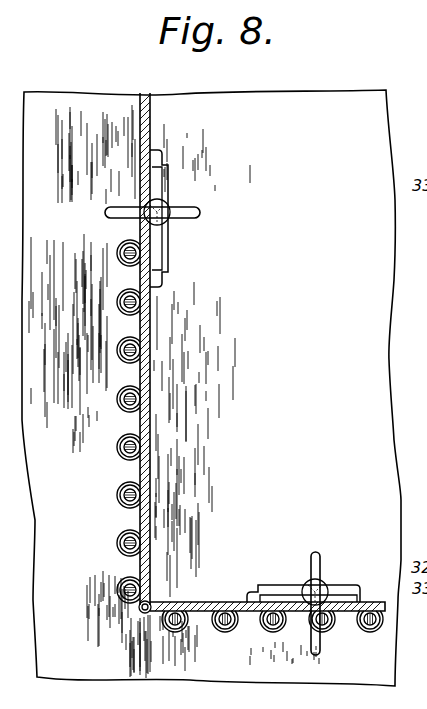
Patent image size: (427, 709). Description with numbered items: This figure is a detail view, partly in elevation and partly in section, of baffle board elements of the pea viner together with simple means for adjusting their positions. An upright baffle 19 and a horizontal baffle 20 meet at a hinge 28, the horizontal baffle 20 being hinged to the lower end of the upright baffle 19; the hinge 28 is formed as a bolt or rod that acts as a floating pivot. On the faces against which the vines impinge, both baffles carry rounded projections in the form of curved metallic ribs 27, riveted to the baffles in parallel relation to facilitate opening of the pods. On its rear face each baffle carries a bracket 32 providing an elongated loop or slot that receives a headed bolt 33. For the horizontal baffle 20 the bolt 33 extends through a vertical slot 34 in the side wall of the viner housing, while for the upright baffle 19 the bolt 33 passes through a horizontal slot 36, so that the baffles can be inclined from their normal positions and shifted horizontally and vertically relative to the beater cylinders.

The upright baffle 19 is at (151, 378).
The horizontal baffle 20 is at (195, 603).
The curved metallic ribs 27 is at (123, 362).
The hinge 28 is at (142, 612).
The bracket 32 is at (166, 255).
The headed bolt 33 is at (166, 201).
The vertical slot 34 is at (310, 641).
The horizontal slot 36 is at (110, 212).